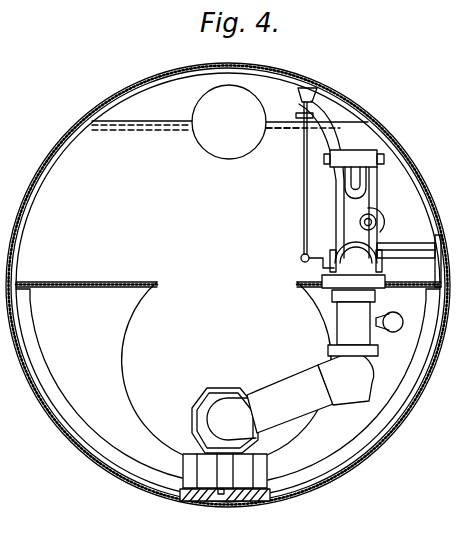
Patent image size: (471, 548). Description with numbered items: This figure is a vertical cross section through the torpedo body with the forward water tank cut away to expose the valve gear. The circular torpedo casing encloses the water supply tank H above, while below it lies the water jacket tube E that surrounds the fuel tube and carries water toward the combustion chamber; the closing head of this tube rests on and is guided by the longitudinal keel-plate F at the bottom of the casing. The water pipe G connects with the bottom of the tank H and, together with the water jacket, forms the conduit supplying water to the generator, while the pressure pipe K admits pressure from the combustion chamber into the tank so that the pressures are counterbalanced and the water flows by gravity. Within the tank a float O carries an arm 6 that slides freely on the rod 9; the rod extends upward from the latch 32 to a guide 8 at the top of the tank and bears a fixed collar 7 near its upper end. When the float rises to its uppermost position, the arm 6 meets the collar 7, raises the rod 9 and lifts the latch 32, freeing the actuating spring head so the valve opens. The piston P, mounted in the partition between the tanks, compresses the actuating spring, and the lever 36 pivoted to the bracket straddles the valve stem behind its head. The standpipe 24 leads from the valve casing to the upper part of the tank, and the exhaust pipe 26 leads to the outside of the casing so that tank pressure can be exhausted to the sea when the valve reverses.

The guide 8 is at (326, 93).
The water supply tank H is at (228, 204).
The water jacket tube E is at (130, 326).
The float O is at (229, 122).
The standpipe 24 is at (297, 89).
The collar 7 is at (299, 115).
The arm 6 is at (285, 129).
The link or rod 9 is at (304, 212).
The lever 36 is at (358, 182).
The piston P is at (379, 226).
The exhaust pipe 26 is at (405, 249).
The latch 32 is at (331, 270).
The pressure pipe K is at (385, 313).
The water pipe G is at (353, 323).
The keel-plate F is at (262, 499).